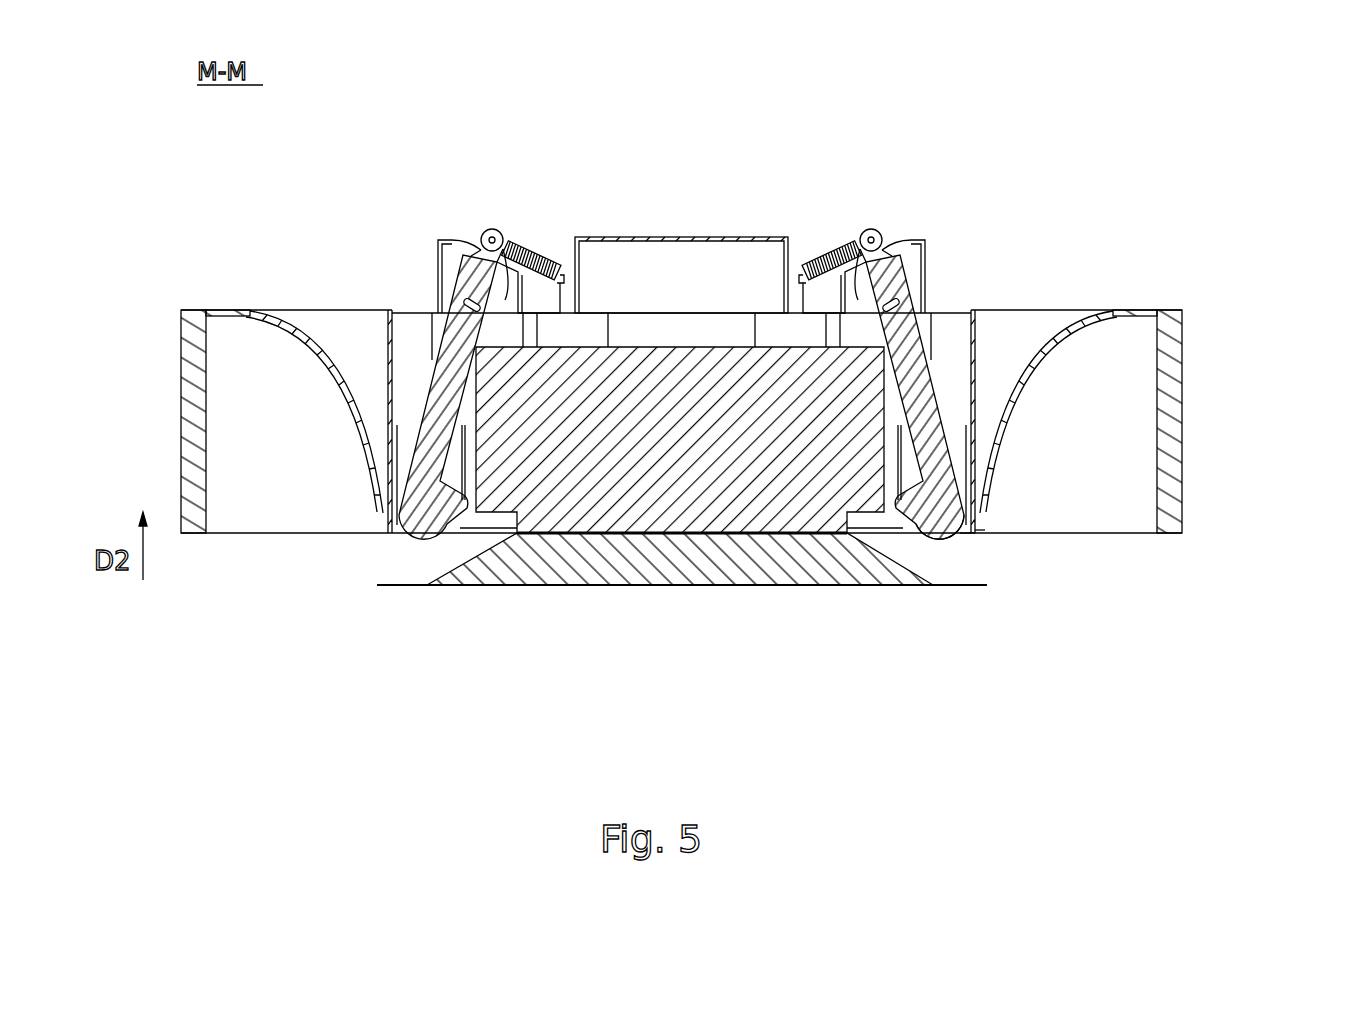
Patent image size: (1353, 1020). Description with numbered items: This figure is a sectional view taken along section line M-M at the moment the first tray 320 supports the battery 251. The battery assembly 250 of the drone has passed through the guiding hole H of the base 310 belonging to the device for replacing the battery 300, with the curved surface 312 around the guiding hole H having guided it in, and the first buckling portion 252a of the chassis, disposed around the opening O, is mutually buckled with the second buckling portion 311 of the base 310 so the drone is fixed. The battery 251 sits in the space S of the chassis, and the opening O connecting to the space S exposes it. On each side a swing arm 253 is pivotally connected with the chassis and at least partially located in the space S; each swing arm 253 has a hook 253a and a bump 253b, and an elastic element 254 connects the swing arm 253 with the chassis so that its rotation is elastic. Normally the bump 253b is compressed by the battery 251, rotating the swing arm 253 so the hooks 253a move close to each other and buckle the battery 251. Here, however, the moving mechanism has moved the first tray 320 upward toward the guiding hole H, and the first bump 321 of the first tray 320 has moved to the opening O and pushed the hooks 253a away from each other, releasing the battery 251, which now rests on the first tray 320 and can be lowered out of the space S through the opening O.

The battery assembly 250 is at (400, 290).
The battery 251 is at (640, 360).
The first buckling portion 252a is at (985, 523).
The swing arm 253 is at (470, 278).
The hook 253a is at (930, 545).
The bump 253b is at (858, 315).
The elastic element 254 is at (820, 262).
The device for replacing the battery 300 is at (1190, 272).
The base 310 is at (1172, 425).
The second buckling portion 311 is at (985, 494).
The curved surface 312 is at (1048, 345).
The first tray 320 is at (388, 588).
The first bump 321 is at (615, 568).
The space S is at (943, 383).
The guiding hole H is at (995, 360).
The opening O is at (969, 542).